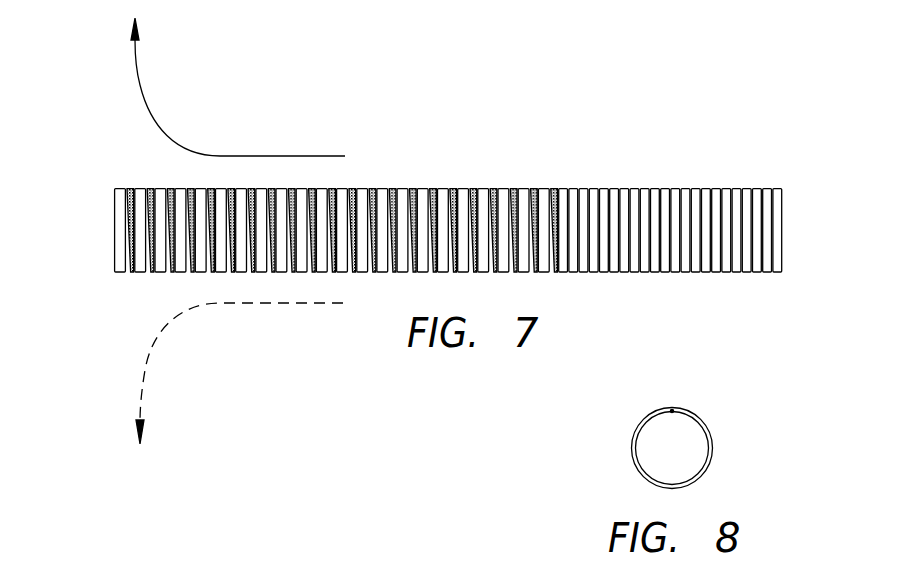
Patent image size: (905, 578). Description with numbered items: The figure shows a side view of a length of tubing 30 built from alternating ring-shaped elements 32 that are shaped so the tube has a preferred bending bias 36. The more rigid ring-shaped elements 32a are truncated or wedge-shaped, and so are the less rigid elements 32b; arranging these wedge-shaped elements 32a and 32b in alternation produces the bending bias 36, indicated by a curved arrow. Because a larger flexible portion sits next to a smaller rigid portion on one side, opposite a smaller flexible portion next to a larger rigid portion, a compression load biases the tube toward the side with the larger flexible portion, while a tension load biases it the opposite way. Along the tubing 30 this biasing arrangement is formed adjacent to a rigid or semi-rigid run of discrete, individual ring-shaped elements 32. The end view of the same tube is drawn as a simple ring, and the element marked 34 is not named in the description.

The tubing 30 is at (460, 153).
The ring-shaped elements 32 is at (480, 188).
The more rigid ring-shaped elements 32a is at (180, 188).
The less rigid elements 32b is at (230, 188).
The expandable region 34 is at (372, 188).
The bending bias 36 is at (156, 112).